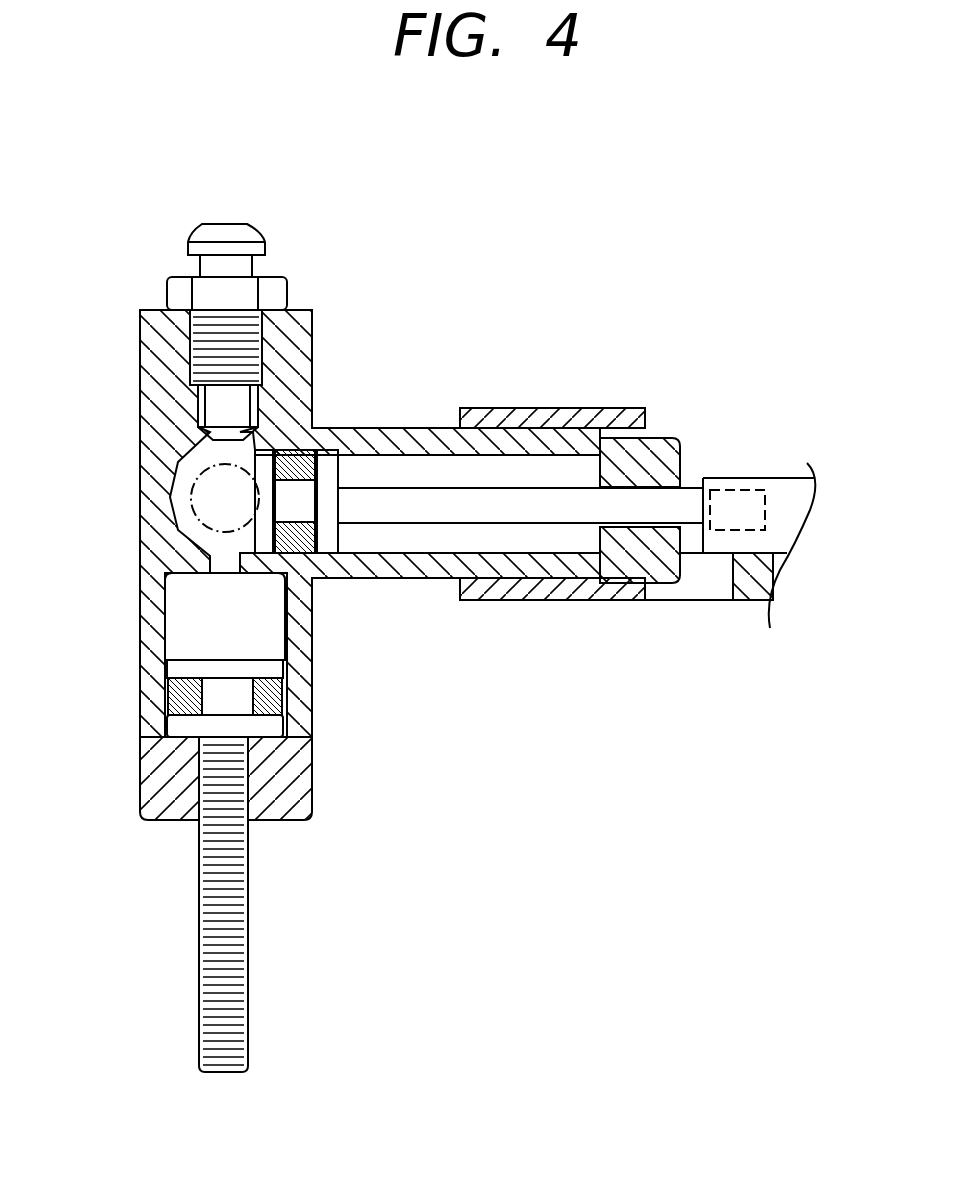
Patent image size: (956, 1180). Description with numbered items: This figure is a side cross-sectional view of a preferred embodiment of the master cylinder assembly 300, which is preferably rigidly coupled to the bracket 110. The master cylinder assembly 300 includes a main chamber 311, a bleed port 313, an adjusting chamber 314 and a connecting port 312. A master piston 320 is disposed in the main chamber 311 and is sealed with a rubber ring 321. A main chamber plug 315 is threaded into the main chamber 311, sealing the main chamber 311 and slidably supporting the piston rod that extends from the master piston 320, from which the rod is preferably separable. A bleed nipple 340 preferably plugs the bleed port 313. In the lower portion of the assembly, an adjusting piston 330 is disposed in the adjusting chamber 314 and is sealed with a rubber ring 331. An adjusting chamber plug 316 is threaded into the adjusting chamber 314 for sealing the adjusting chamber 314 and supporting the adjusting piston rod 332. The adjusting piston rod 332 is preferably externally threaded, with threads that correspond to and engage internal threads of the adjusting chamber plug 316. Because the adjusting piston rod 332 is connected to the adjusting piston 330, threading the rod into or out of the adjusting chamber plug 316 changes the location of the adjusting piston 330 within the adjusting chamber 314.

The master cylinder assembly 300 is at (600, 266).
The main chamber 311 is at (390, 543).
The connecting port 312 is at (210, 498).
The bleed port 313 is at (265, 345).
The adjusting chamber 314 is at (282, 642).
The main chamber plug 315 is at (640, 440).
The adjusting chamber plug 316 is at (300, 803).
The master piston 320 is at (332, 465).
The rubber ring 321 is at (312, 428).
The adjusting piston 330 is at (177, 670).
The rubber ring 331 is at (277, 697).
The adjusting piston rod 332 is at (247, 988).
The bleed nipple 340 is at (275, 292).
The bracket 110 is at (583, 600).